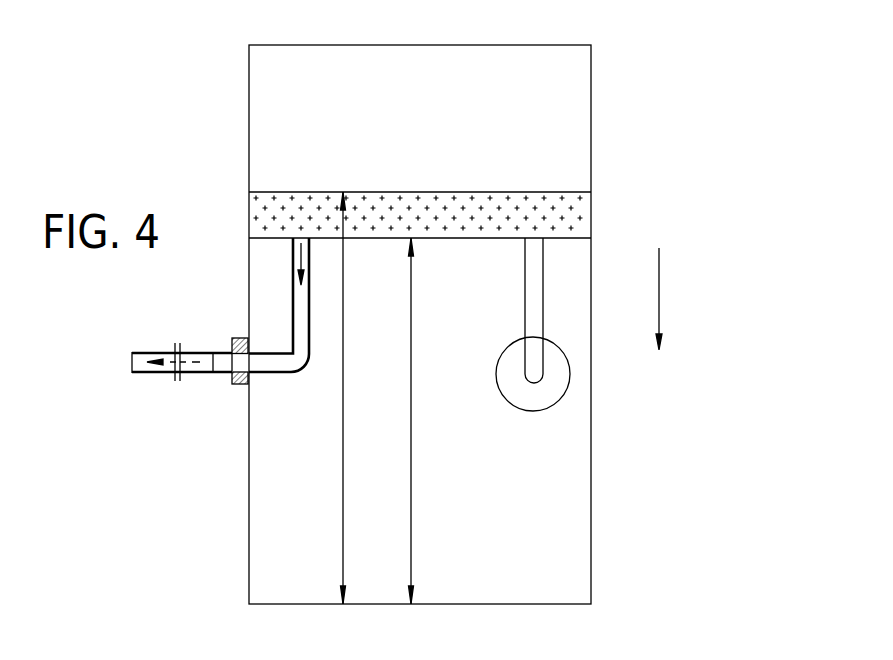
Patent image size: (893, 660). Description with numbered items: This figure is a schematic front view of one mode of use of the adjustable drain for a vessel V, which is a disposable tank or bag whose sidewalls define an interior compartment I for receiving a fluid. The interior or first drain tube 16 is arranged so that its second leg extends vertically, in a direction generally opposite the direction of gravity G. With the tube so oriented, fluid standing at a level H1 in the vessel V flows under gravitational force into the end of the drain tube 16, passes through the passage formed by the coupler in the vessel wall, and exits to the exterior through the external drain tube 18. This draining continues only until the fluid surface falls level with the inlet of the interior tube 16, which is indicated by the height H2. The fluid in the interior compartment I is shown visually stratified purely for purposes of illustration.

The first drain tube 16 is at (288, 374).
The external drain tube 18 is at (143, 374).
The vessel V is at (623, 112).
The interior compartment I is at (483, 145).
The gravity G is at (659, 288).
The fluid level H1 is at (331, 398).
The height H2 is at (399, 421).